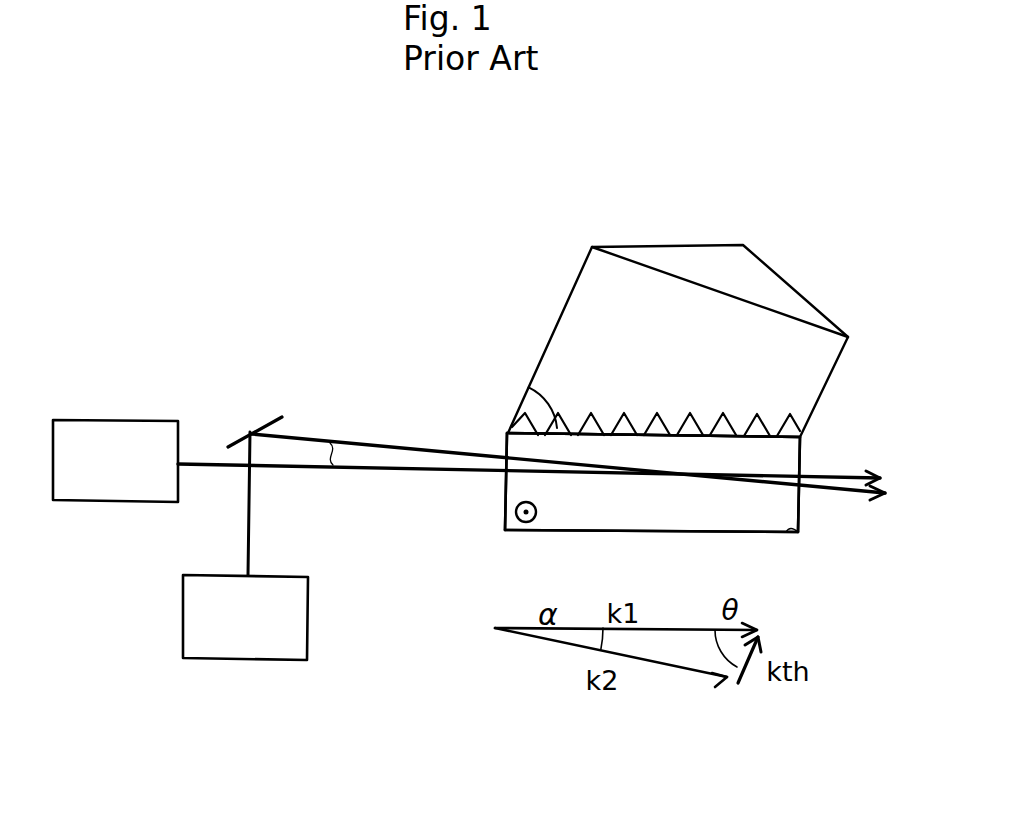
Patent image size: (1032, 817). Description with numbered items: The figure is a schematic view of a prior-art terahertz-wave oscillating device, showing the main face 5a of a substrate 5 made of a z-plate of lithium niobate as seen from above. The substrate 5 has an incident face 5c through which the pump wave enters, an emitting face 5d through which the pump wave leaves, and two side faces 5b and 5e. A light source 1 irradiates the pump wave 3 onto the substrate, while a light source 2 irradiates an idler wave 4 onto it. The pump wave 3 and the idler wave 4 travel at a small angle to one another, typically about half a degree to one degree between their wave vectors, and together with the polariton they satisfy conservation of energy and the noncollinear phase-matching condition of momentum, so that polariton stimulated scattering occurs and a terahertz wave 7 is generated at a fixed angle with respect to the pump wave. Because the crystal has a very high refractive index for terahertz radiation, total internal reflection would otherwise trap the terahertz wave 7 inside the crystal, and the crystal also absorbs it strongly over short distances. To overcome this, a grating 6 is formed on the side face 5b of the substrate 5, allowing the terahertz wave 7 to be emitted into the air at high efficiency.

The light source 1 is at (119, 477).
The light source 2 is at (228, 631).
The pump wave 3 is at (387, 473).
The idler wave 4 is at (327, 440).
The substrate 5 is at (667, 473).
The main face 5a is at (797, 533).
The side face 5b is at (675, 430).
The incident face 5c is at (503, 443).
The emitting face 5d is at (802, 507).
The side face 5e is at (668, 531).
The grating 6 is at (597, 425).
The terahertz wave 7 is at (772, 287).